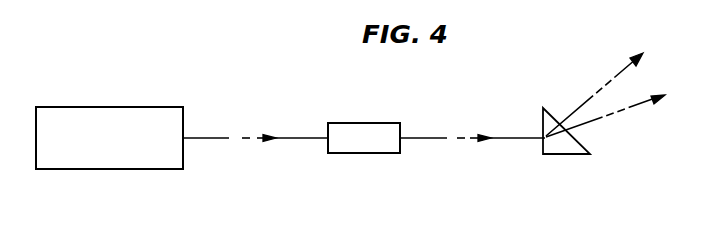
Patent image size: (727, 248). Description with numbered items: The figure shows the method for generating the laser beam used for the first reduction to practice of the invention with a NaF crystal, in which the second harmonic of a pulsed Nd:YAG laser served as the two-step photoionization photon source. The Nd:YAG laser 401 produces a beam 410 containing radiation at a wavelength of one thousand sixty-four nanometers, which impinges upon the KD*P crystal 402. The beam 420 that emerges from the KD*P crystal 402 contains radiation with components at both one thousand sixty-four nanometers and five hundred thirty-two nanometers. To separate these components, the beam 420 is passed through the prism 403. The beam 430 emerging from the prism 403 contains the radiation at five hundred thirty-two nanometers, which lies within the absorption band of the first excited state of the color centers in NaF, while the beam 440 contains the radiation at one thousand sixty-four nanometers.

The Nd:YAG laser 401 is at (110, 169).
The KD*P crystal 402 is at (367, 153).
The prism 403 is at (567, 154).
The beam 410 is at (284, 139).
The beam 420 is at (502, 138).
The beam 430 is at (615, 82).
The beam 440 is at (636, 113).